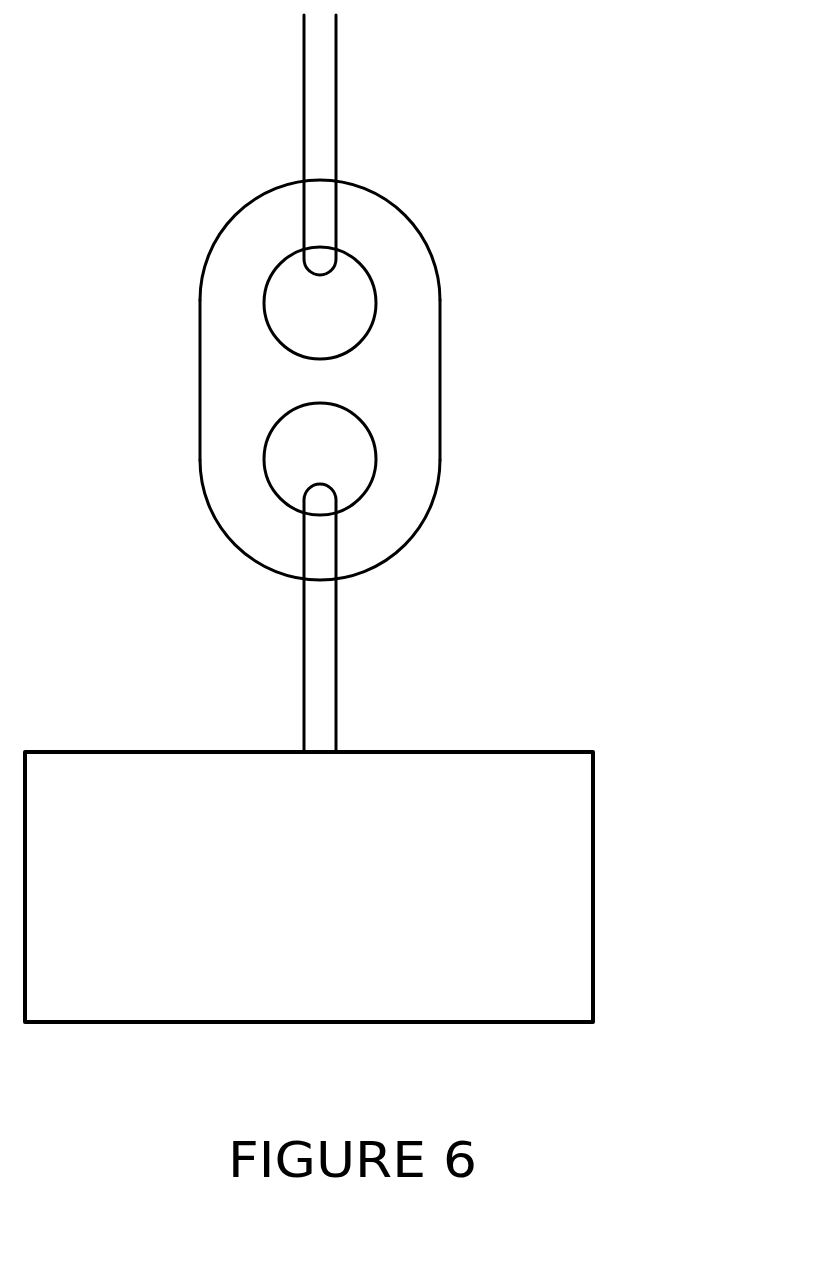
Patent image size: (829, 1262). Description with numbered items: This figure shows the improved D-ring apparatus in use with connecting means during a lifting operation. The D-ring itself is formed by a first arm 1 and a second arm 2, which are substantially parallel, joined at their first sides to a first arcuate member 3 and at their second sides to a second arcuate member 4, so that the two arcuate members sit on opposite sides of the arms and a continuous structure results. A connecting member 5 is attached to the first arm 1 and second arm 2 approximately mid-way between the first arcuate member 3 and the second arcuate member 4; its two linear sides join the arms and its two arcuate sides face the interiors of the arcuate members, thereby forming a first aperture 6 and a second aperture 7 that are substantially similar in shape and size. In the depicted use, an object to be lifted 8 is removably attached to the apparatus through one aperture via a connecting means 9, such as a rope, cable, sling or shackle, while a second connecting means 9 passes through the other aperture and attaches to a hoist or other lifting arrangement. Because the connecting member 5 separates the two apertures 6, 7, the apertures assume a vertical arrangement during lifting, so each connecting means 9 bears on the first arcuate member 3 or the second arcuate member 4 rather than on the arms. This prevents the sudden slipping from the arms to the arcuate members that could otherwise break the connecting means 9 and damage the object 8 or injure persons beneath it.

The first arm 1 is at (173, 428).
The second arm 2 is at (354, 373).
The first arcuate member 3 is at (405, 220).
The second arcuate member 4 is at (427, 524).
The connecting member 5 is at (272, 398).
The first aperture 6 is at (352, 308).
The second aperture 7 is at (362, 453).
The object to be lifted 8 is at (593, 802).
The connecting means 9 is at (336, 102).